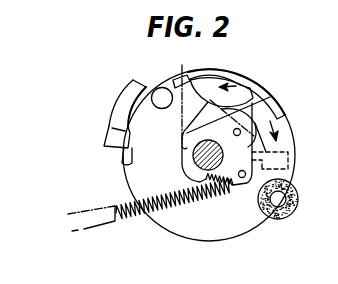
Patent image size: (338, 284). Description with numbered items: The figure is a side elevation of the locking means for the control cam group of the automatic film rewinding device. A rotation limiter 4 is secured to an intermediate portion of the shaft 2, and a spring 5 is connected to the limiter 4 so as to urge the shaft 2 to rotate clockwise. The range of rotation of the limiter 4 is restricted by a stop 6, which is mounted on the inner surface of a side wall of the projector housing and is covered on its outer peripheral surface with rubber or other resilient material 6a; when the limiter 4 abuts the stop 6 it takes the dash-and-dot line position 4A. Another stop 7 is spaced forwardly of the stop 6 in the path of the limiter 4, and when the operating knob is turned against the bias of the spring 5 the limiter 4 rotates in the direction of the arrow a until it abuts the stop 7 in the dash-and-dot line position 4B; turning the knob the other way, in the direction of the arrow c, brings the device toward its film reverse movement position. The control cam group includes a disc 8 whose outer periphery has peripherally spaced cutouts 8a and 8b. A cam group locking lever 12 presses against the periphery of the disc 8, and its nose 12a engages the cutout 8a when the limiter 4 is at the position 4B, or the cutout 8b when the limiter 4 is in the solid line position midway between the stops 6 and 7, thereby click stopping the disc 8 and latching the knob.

The shaft 2 is at (192, 162).
The rotation limiter 4 is at (188, 148).
The dash-and-dot line position of limiter 4A is at (288, 149).
The dash-and-dot line position of limiter 4B is at (210, 100).
The spring 5 is at (135, 213).
The stop 6 is at (266, 203).
The resilient material 6a is at (282, 195).
The stop 7 is at (160, 88).
The disc 8 is at (263, 94).
The cutout 8a is at (124, 161).
The cutout 8b is at (173, 80).
The cam group locking lever 12 is at (127, 97).
The nose 12a is at (114, 124).
The arrow a is at (246, 86).
The arrow c is at (278, 119).